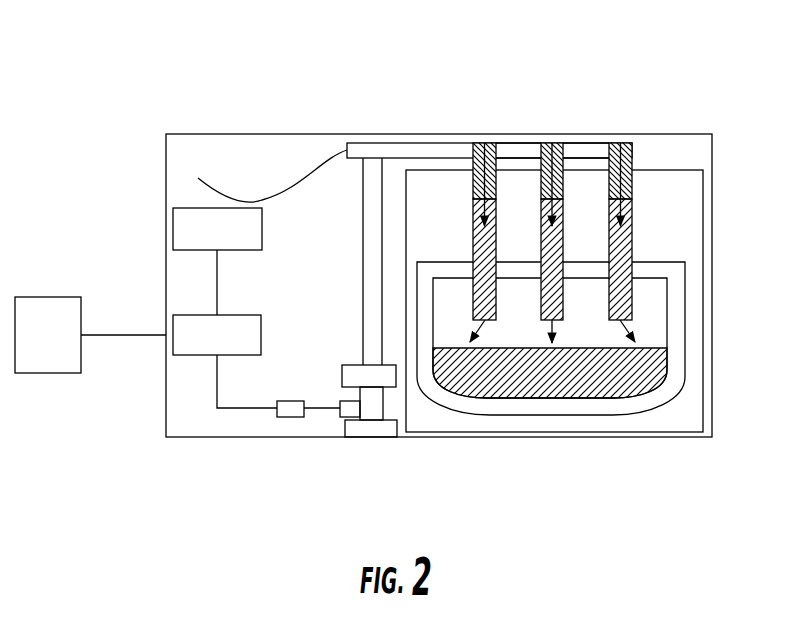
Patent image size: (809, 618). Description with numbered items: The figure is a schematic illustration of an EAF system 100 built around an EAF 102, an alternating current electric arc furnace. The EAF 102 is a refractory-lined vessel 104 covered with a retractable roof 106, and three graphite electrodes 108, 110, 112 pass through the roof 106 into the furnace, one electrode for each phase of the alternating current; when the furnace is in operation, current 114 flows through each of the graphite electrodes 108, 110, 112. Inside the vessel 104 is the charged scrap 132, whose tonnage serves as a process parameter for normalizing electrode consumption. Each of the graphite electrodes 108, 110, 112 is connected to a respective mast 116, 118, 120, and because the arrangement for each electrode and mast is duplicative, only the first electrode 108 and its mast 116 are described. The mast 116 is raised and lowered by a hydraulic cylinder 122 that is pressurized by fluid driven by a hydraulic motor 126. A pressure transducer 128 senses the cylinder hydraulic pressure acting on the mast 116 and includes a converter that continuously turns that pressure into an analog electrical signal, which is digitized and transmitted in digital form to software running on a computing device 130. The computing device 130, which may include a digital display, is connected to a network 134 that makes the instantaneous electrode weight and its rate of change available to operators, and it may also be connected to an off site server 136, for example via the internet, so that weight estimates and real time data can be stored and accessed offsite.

The EAF system 100 is at (273, 60).
The EAF 102 is at (706, 130).
The refractory-lined vessel 104 is at (677, 297).
The retractable roof 106 is at (645, 262).
The graphite electrode 108 is at (483, 143).
The graphite electrode 110 is at (550, 143).
The graphite electrode 112 is at (620, 143).
The current 114 is at (240, 197).
The mast 116 is at (400, 143).
The mast 118 is at (520, 143).
The mast 120 is at (587, 143).
The hydraulic cylinder 122 is at (390, 377).
The hydraulic motor 126 is at (345, 417).
The pressure transducer 128 is at (292, 417).
The computing device 130 is at (233, 347).
The scrap 132 is at (640, 378).
The network 134 is at (233, 243).
The off site server 136 is at (63, 347).